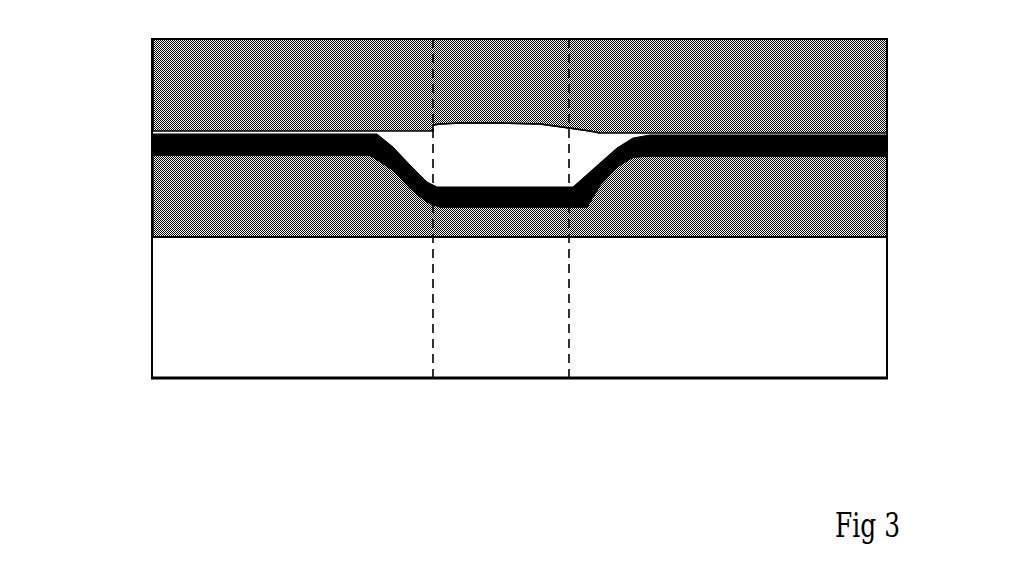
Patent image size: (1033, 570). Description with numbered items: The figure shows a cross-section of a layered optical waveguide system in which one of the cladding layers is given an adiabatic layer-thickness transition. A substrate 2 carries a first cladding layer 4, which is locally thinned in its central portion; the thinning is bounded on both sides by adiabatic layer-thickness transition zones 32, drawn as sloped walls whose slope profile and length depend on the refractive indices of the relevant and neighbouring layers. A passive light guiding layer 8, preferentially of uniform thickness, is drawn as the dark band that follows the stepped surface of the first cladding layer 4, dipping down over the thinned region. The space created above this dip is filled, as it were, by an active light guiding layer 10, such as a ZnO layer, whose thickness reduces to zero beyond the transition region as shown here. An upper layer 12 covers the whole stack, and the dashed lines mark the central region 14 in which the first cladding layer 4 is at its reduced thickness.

The substrate 2 is at (202, 323).
The first cladding layer 4 is at (193, 210).
The passive light guiding layer 8 is at (153, 147).
The active light guiding layer 10 is at (440, 145).
The upper layer 12 is at (180, 77).
The recess region 14 is at (501, 208).
The adiabatic layer-thickness transition zones 32 is at (410, 195).